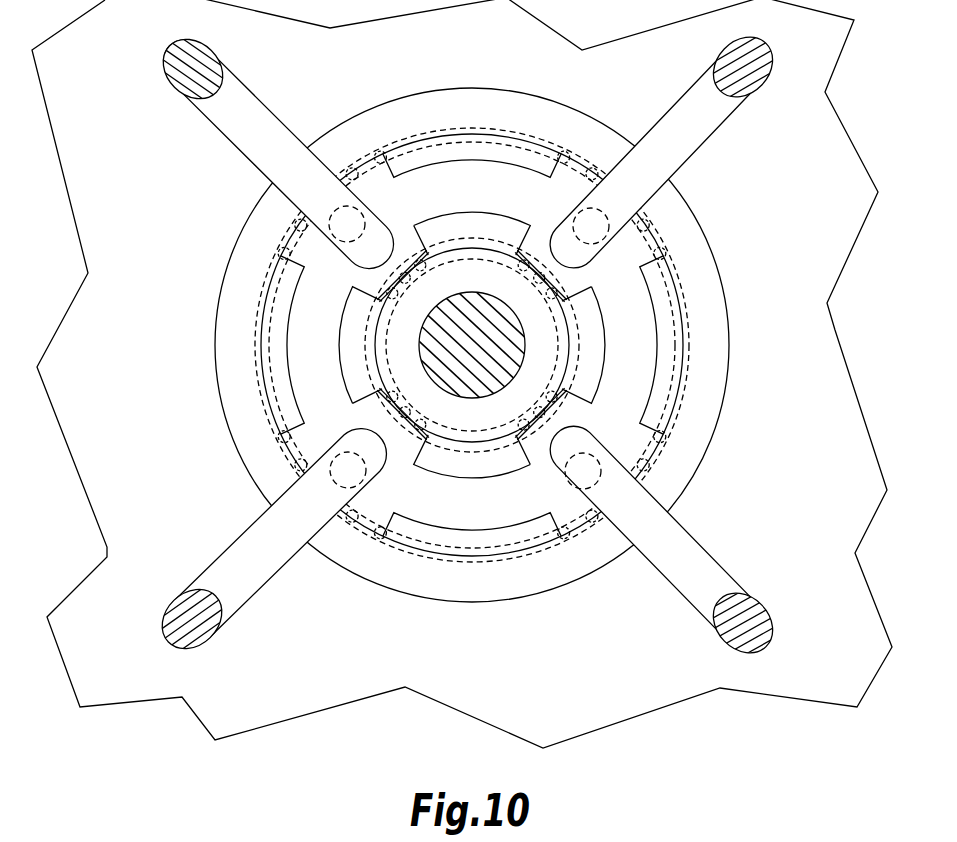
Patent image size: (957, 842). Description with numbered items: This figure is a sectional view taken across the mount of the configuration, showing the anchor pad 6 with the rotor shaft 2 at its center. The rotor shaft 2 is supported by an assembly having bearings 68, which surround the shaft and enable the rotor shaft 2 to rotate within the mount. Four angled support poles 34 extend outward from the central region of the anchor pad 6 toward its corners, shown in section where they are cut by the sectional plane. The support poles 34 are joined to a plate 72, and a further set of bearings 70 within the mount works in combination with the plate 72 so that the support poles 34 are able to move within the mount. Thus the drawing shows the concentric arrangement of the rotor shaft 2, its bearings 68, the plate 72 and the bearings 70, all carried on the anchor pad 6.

The rotor shaft 2 is at (500, 335).
The anchor pad 6 is at (110, 313).
The angled support poles 34 is at (247, 120).
The bearings 68 is at (560, 268).
The bearings 70 is at (268, 215).
The plate 72 is at (443, 502).